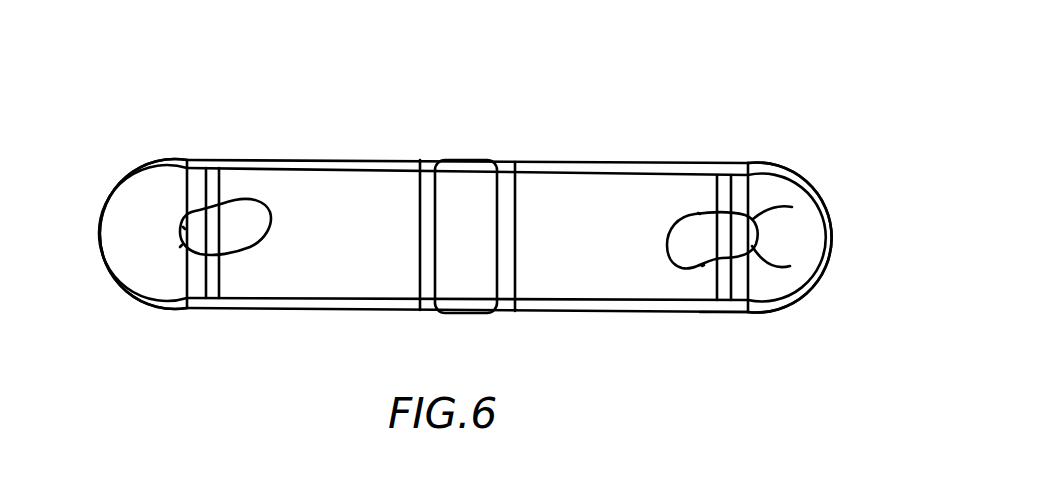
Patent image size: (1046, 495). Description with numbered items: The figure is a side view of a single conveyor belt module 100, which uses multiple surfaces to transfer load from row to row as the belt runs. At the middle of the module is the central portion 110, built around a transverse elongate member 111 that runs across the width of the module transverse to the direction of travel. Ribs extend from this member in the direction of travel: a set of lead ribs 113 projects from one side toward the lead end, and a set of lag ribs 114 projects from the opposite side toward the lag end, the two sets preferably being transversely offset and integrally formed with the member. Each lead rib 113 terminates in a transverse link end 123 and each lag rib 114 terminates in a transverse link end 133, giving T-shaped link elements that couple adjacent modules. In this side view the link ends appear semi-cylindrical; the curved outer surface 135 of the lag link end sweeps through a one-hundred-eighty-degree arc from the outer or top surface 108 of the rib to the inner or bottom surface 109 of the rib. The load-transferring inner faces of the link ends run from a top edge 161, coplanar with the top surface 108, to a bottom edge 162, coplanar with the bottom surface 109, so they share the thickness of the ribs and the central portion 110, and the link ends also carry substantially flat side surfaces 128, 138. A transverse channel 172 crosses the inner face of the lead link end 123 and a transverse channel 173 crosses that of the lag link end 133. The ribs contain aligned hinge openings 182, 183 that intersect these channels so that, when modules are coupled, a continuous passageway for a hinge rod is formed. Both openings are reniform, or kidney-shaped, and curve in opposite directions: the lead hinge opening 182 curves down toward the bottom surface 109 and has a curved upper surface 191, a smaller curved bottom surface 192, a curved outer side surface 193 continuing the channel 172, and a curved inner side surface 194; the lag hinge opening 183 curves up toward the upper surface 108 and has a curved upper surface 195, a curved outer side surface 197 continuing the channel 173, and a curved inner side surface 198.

The conveyor belt module 100 is at (602, 110).
The outer (top) surface of rib 108 is at (727, 170).
The inner (bottom) surface of rib 109 is at (704, 316).
The central portion 110 is at (642, 136).
The transverse elongate member 111 is at (483, 239).
The lead ribs 113 is at (600, 222).
The lag ribs 114 is at (363, 252).
The lead transverse link end 123 is at (758, 194).
The side surface of lead link end 128 is at (778, 246).
The lag transverse link end 133 is at (143, 207).
The curved outer surface of lag link end 135 is at (128, 265).
The side surface of lag link end 138 is at (160, 223).
The top edge 161 is at (737, 173).
The bottom edge 162 is at (738, 311).
The transverse channel of lead link end 172 is at (792, 276).
The transverse channel of lag link end 173 is at (183, 227).
The lead hinge opening 182 is at (725, 252).
The lag hinge opening 183 is at (238, 242).
The curved upper surface of lead hinge opening 191 is at (698, 213).
The curved bottom surface of lead hinge opening 192 is at (702, 266).
The curved outer side surface of lead hinge opening 193 is at (788, 207).
The curved inner side surface of lead hinge opening 194 is at (607, 270).
The curved upper surface of lag hinge opening 195 is at (227, 200).
The curved outer side surface of lag hinge opening 197 is at (180, 247).
The curved inner side surface of lag hinge opening 198 is at (270, 213).